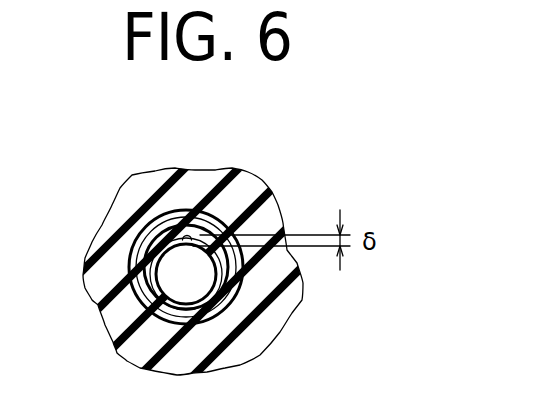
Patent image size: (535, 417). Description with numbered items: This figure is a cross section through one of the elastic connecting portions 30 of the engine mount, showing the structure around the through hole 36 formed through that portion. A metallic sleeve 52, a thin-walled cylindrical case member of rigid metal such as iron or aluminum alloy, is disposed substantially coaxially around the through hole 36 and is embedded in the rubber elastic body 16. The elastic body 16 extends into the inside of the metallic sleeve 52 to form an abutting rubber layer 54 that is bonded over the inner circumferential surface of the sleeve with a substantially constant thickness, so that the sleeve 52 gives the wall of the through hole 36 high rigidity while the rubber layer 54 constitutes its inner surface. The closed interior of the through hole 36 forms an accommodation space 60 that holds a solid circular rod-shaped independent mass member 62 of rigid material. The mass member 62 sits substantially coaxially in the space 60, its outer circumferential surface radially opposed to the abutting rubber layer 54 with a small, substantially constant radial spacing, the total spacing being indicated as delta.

The elastic body 16 is at (259, 166).
The elastic connecting portion 30 is at (263, 212).
The through hole 36 is at (187, 235).
The metallic sleeve 52 is at (207, 325).
The abutting rubber layer 54 is at (161, 305).
The accommodation space 60 is at (155, 225).
The independent mass member 62 is at (163, 257).